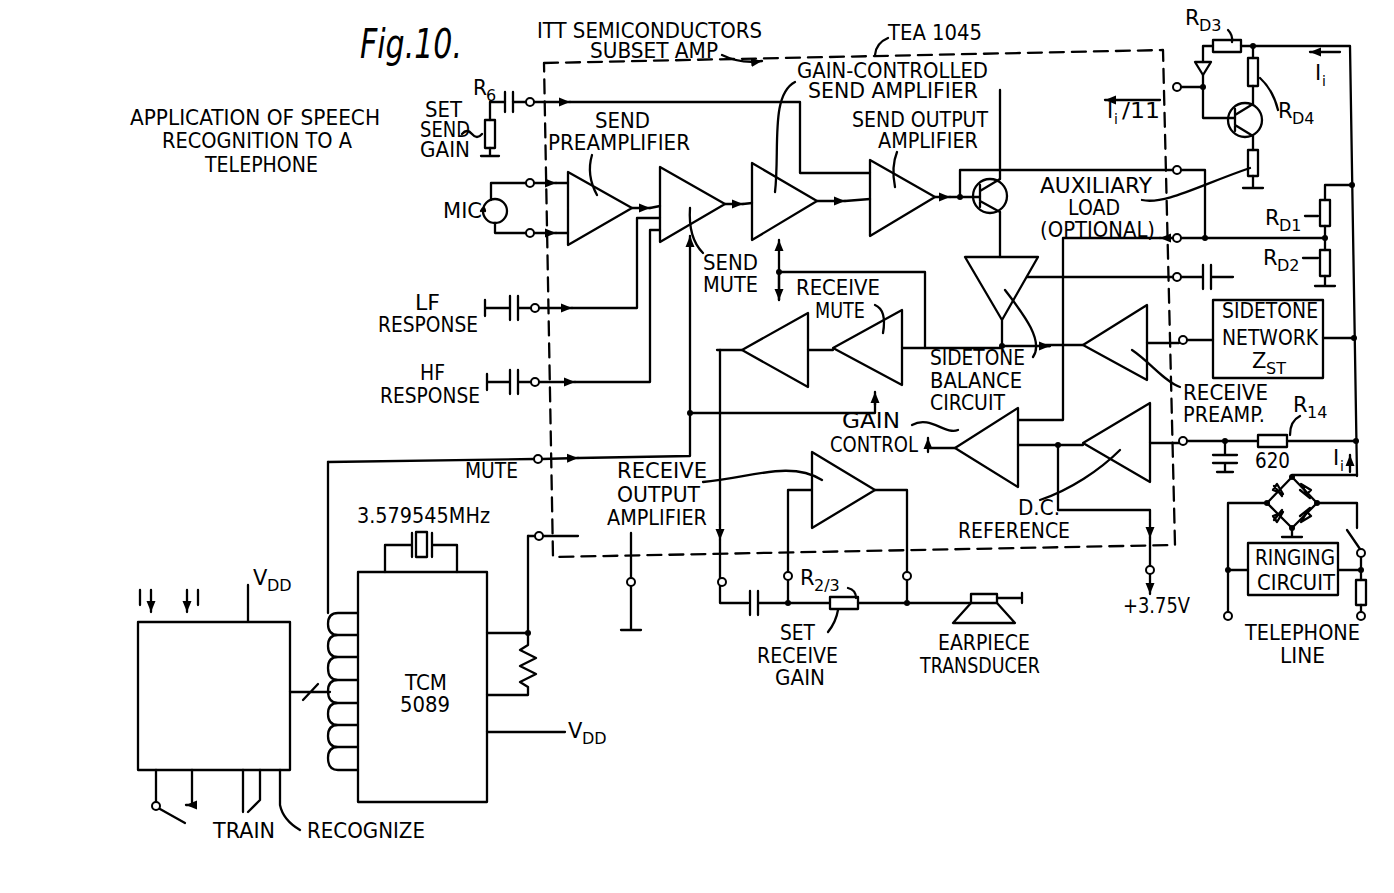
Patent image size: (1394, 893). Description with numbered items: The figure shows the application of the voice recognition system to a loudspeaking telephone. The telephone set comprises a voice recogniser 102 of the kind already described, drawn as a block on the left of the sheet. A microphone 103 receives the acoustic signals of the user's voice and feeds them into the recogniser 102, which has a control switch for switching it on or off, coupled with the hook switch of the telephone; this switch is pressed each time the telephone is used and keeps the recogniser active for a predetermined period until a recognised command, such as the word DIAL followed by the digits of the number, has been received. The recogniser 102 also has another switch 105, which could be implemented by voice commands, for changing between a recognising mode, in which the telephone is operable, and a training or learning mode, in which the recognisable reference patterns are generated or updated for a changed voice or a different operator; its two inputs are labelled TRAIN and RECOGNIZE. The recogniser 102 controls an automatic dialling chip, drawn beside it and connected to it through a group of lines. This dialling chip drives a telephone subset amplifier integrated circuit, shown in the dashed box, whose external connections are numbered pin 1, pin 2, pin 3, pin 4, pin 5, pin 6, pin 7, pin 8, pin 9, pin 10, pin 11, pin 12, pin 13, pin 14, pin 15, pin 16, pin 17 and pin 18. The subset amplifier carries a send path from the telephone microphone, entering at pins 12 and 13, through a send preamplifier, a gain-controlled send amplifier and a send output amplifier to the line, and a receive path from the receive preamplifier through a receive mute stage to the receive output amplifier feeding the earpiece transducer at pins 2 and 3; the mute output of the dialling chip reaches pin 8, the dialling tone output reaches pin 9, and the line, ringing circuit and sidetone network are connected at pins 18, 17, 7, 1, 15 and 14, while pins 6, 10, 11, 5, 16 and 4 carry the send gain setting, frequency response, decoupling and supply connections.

The voice recogniser 102 is at (214, 677).
The microphone 103 is at (170, 581).
The switch 105 is at (271, 786).
The pin 1 is at (1177, 273).
The pin 2 is at (784, 576).
The pin 3 is at (903, 576).
The pin 4 is at (1154, 571).
The pin 5 is at (627, 582).
The pin 6 is at (530, 98).
The pin 7 is at (1179, 234).
The pin 8 is at (538, 455).
The pin 9 is at (539, 532).
The pin 10 is at (535, 304).
The pin 11 is at (535, 378).
The pin 12 is at (530, 187).
The pin 13 is at (530, 237).
The pin 14 is at (1183, 445).
The pin 15 is at (1183, 336).
The pin 16 is at (718, 582).
The pin 17 is at (1178, 166).
The pin 18 is at (1177, 83).